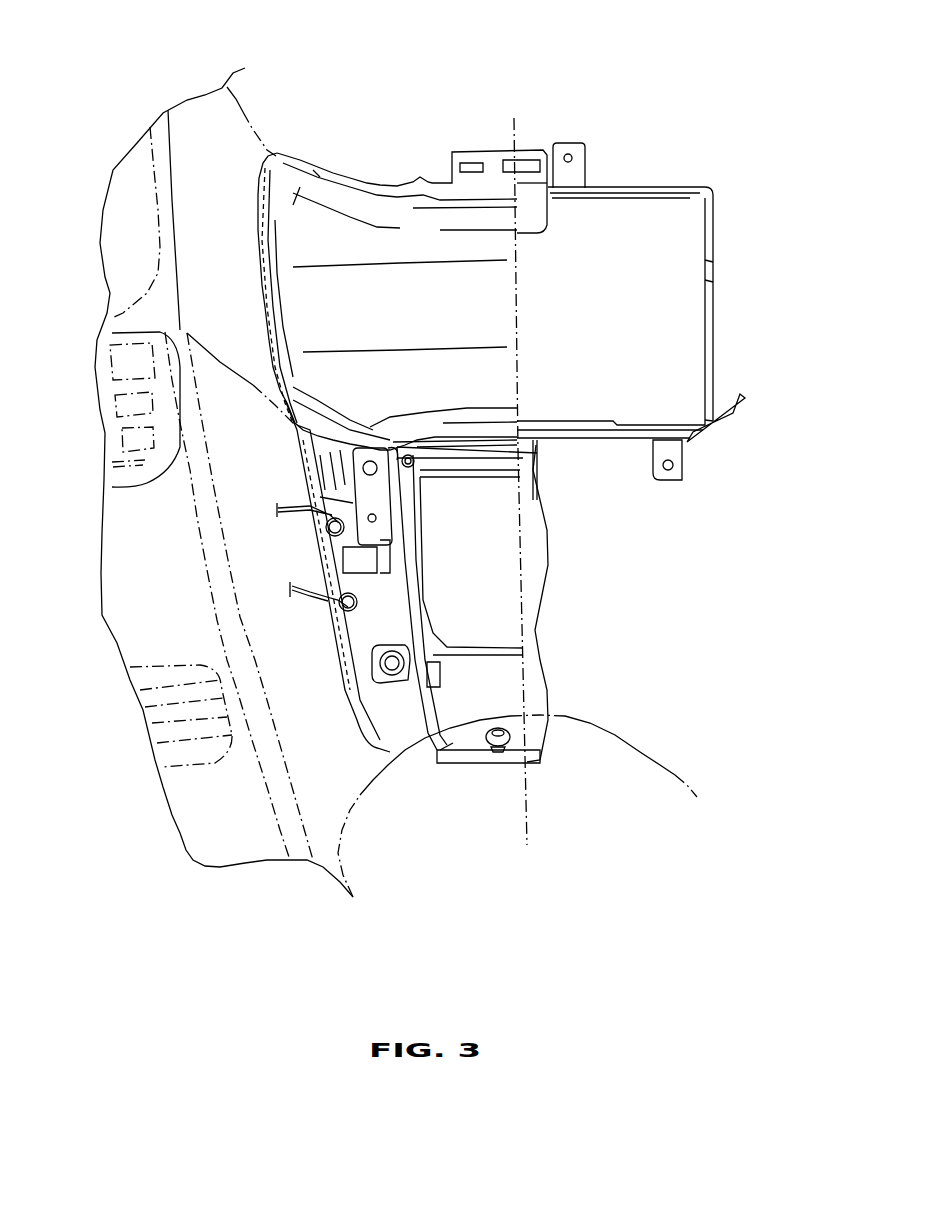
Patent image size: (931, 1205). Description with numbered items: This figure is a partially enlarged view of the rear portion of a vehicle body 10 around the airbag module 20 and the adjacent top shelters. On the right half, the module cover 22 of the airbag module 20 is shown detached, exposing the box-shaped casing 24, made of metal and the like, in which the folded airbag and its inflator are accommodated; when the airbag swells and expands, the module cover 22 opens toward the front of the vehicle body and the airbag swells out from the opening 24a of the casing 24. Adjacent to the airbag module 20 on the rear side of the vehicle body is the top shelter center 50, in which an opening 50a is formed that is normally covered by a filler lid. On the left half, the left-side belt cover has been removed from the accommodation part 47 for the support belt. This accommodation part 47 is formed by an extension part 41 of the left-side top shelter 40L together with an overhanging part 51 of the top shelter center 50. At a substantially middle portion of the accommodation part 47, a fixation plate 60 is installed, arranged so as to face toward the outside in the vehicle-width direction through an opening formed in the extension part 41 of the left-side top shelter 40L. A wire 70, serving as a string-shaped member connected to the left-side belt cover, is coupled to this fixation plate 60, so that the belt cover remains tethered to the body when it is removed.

The vehicle body / wheel arch 10 is at (672, 765).
The airbag module 20 is at (685, 130).
The module cover 22 is at (369, 212).
The casing 24 is at (713, 200).
The opening of the casing 24a is at (662, 313).
The left-side top shelter 40L is at (307, 775).
The extension part 41 is at (303, 443).
The accommodation part 47 is at (337, 648).
The top shelter center 50 is at (488, 767).
The opening 50a is at (482, 558).
The overhanging part 51 is at (400, 713).
The fixation plate 60 is at (332, 562).
The wire 70 is at (293, 602).